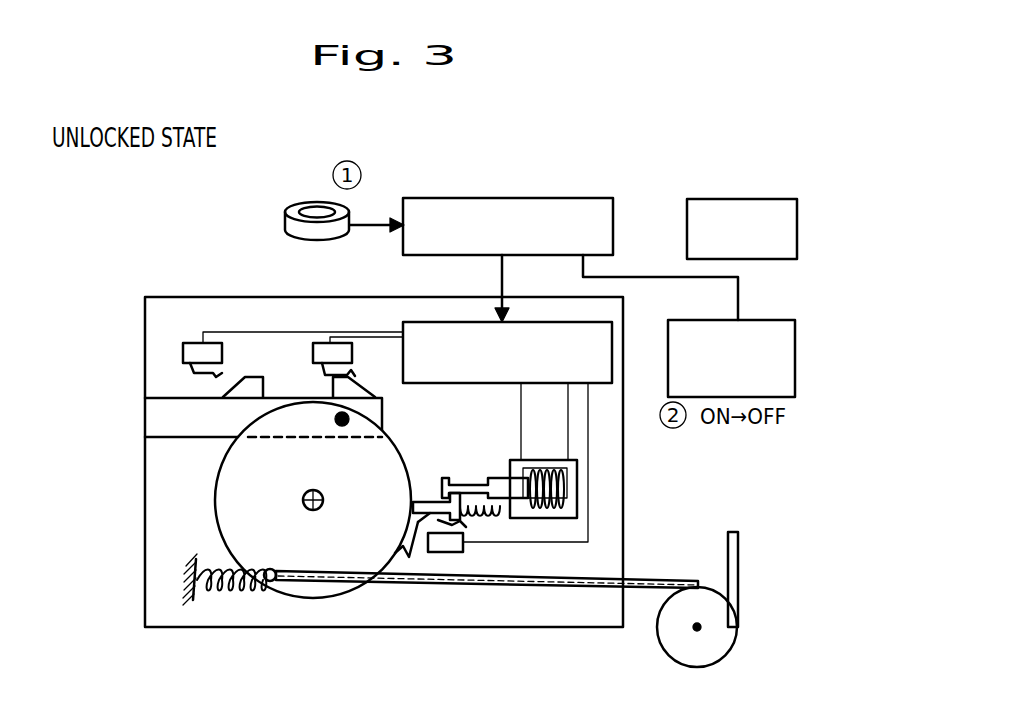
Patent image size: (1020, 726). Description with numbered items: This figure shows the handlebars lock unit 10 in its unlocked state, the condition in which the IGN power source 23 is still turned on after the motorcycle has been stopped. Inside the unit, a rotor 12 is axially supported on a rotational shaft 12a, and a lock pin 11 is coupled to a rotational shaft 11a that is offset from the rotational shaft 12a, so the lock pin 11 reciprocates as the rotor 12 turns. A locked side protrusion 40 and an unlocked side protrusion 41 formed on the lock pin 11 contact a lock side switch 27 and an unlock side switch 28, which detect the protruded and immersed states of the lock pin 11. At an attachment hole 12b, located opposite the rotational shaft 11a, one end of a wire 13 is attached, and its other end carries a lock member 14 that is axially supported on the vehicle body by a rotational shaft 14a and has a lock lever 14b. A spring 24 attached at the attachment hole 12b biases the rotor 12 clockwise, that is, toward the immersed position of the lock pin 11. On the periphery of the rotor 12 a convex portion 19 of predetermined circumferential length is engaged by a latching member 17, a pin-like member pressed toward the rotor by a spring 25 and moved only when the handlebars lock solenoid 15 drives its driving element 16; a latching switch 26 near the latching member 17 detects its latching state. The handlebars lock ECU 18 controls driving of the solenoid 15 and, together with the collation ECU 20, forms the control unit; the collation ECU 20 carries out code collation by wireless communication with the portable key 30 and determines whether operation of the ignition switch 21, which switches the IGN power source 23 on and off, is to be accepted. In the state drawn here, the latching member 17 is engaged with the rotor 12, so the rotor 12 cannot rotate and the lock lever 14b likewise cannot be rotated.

The handlebars lock unit 10 is at (624, 509).
The lock pin 11 is at (176, 430).
The rotational shaft 11a is at (343, 421).
The rotor 12 is at (237, 486).
The rotational shaft 12a is at (303, 500).
The attachment hole 12b is at (270, 582).
The wire 13 is at (523, 591).
The lock member 14 is at (678, 645).
The rotational shaft 14a is at (697, 631).
The lock lever 14b is at (735, 572).
The handlebars lock solenoid 15 is at (548, 518).
The driving element 16 is at (500, 483).
The latching member 17 is at (427, 502).
The handlebars lock ECU 18 is at (592, 383).
The convex portion 19 is at (411, 545).
The collation ECU 20 is at (583, 198).
The ignition switch 21 is at (285, 213).
The IGN power source 23 is at (770, 320).
The spring 24 is at (233, 585).
The spring 25 is at (482, 520).
The latching switch 26 is at (447, 554).
The lock side switch 27 is at (183, 352).
The unlock side switch 28 is at (332, 343).
The portable key 30 is at (757, 199).
The locked side protrusion 40 is at (257, 377).
The unlocked side protrusion 41 is at (353, 377).